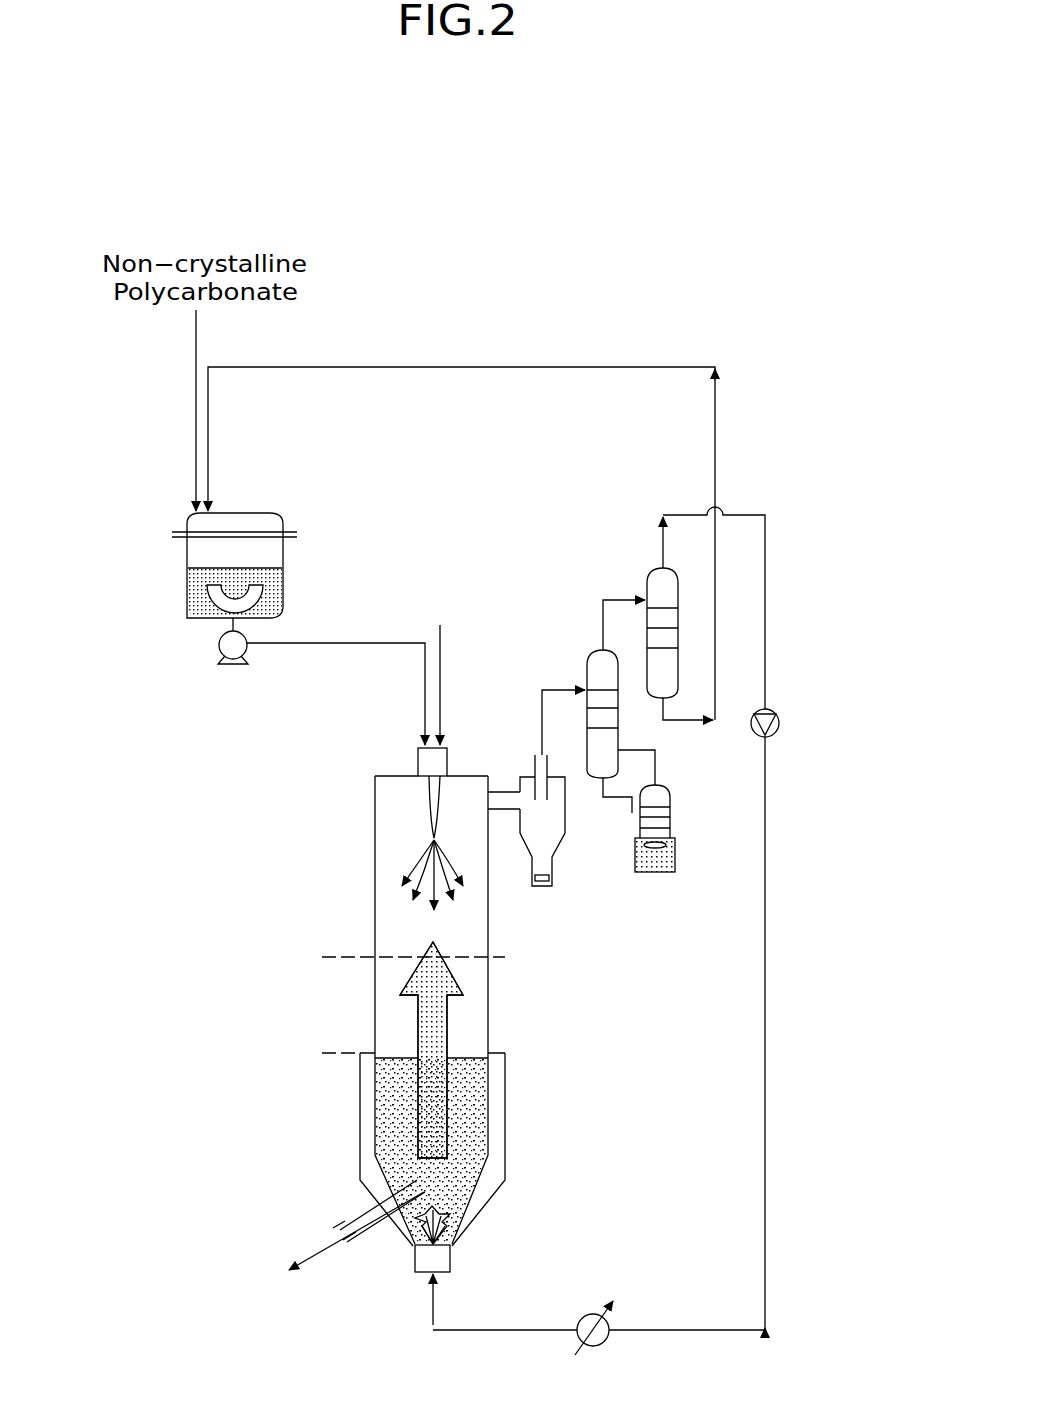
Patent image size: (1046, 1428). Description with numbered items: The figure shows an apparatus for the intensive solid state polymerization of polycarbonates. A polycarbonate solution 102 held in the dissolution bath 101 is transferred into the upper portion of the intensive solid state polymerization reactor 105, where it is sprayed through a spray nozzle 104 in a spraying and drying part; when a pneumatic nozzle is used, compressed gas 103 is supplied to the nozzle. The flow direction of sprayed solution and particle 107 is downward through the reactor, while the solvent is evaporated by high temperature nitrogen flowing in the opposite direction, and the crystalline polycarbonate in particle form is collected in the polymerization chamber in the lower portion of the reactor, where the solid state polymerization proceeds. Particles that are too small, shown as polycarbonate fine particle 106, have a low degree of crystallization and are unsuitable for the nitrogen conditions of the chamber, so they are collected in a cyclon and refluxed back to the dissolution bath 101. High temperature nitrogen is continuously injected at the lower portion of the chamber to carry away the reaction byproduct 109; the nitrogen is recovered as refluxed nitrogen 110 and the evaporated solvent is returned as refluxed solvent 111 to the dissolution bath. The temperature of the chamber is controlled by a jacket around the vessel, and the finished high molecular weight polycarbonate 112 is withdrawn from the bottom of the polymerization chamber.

The dissolution bath 101 is at (178, 577).
The polycarbonate solution 102 is at (325, 650).
The compressed gas 103 is at (442, 672).
The spray nozzle 104 is at (420, 802).
The intensive solid state polymerization reactor 105 is at (370, 805).
The polycarbonate fine particle 106 is at (546, 792).
The flow direction of sprayed solution and particle 107 is at (440, 1040).
The byproduct 109 is at (681, 828).
The refluxed nitrogen 110 is at (710, 910).
The refluxed solvent 111 is at (472, 371).
The high molecular weight polycarbonate 112 is at (330, 1239).